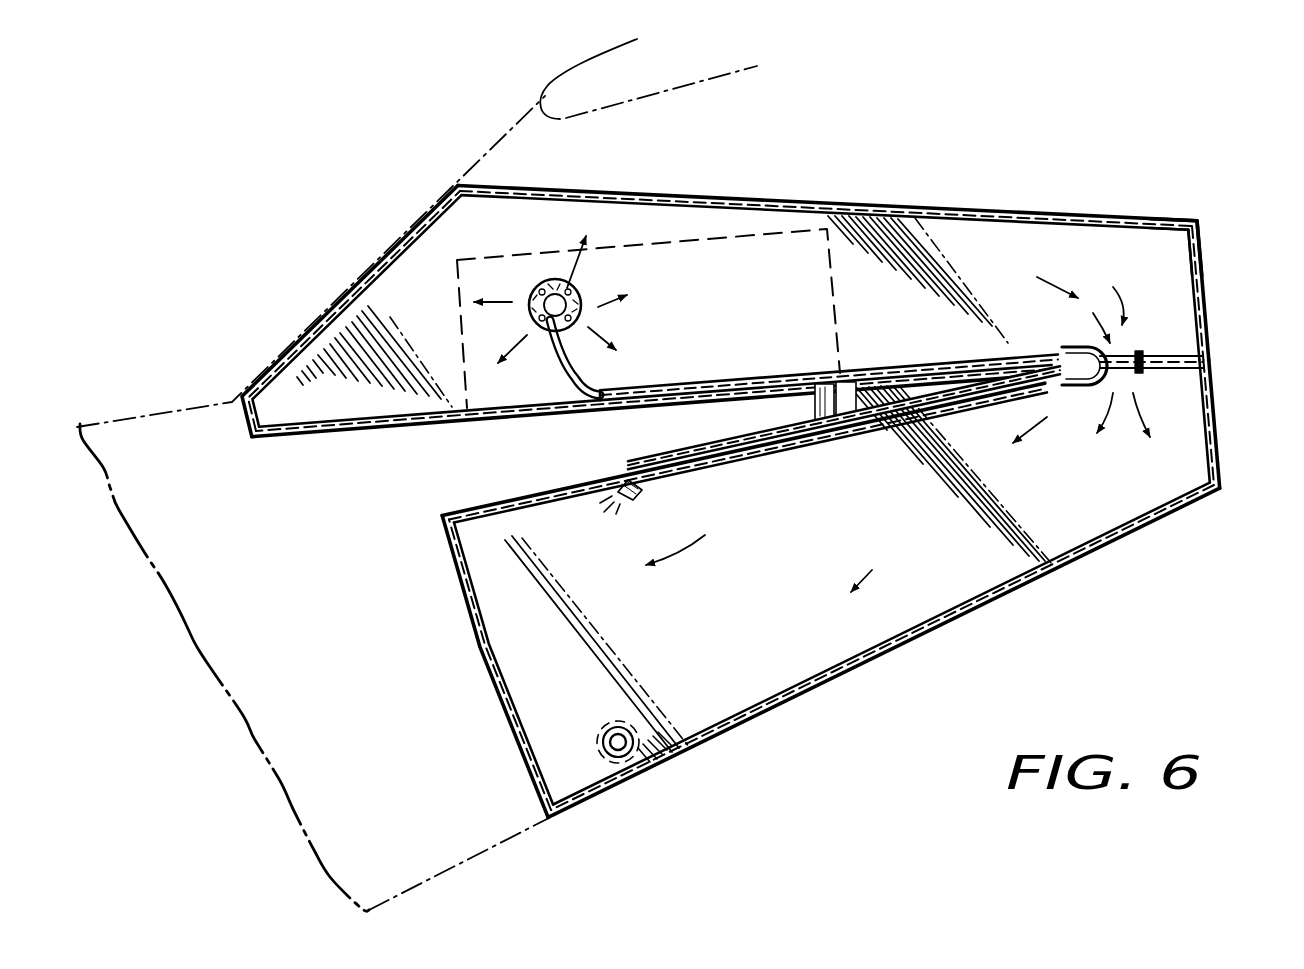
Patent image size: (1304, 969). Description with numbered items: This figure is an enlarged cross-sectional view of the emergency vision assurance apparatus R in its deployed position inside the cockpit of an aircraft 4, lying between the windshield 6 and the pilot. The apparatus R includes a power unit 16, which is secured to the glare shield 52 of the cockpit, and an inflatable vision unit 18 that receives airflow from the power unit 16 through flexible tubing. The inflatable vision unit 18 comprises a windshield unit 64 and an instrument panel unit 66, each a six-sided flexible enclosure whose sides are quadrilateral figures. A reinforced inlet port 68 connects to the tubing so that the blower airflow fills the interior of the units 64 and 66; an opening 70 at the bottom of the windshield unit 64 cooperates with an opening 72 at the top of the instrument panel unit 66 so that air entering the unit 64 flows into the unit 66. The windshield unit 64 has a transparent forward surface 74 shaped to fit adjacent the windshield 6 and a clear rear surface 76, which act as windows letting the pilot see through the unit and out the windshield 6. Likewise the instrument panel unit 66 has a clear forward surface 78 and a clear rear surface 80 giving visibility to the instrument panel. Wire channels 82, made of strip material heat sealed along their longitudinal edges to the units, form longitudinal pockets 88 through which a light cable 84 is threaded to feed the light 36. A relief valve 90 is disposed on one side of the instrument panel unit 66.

The aircraft 4 is at (543, 90).
The windshield 6 is at (478, 150).
The power unit 16 is at (716, 240).
The inflatable vision unit 18 is at (987, 199).
The light 36 is at (641, 493).
The glare shield 52 is at (495, 471).
The windshield unit 64 is at (836, 213).
The instrument panel unit 66 is at (1000, 608).
The reinforced inlet port 68 is at (578, 293).
The opening 70 is at (1124, 348).
The opening 72 is at (1130, 380).
The forward surface 74 is at (367, 268).
The rear surface 76 is at (1205, 319).
The forward surface 78 is at (481, 640).
The rear surface 80 is at (1218, 436).
The wire channel 82 is at (920, 366).
The light cable 84 is at (586, 373).
The longitudinal pocket 88 is at (640, 403).
The relief valve 90 is at (620, 764).
The emergency vision assurance apparatus R is at (1201, 221).